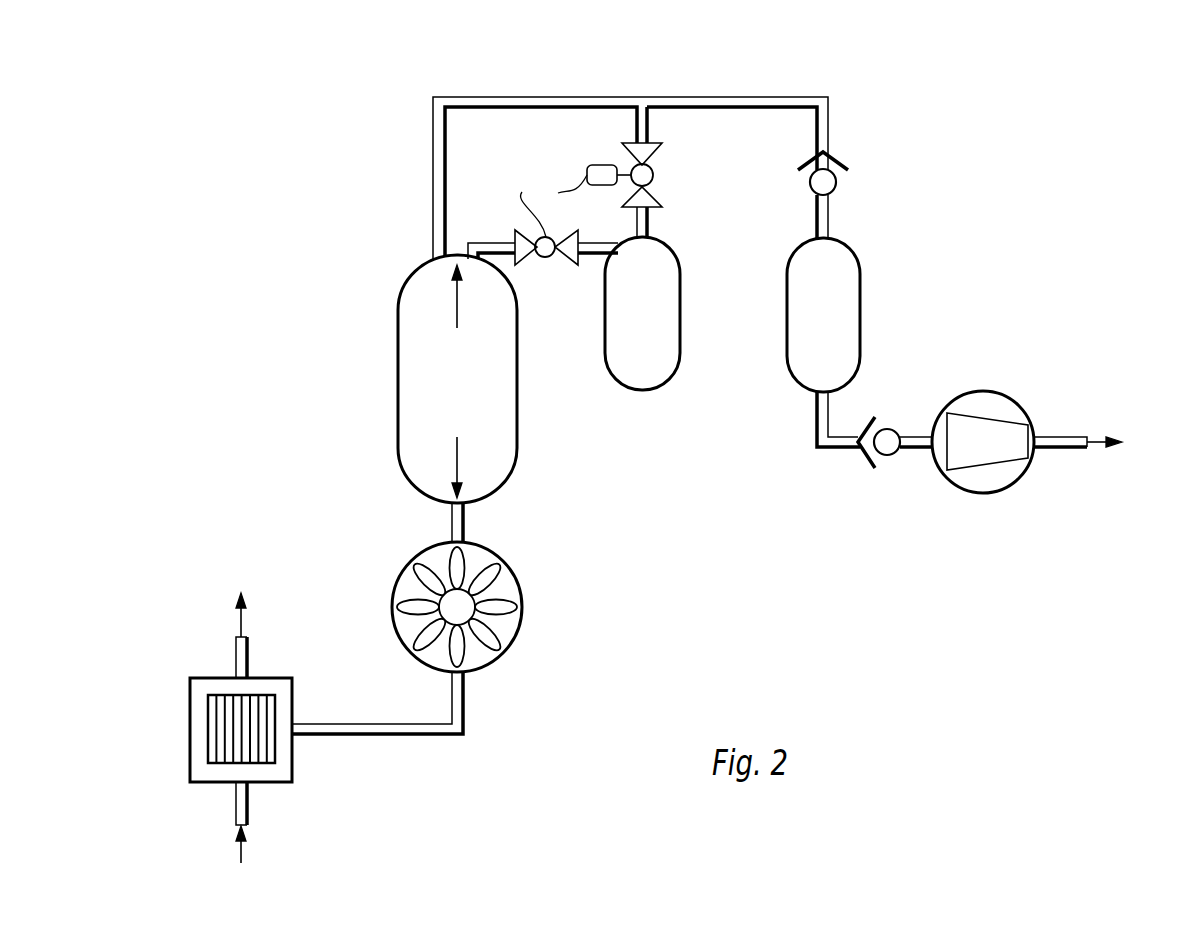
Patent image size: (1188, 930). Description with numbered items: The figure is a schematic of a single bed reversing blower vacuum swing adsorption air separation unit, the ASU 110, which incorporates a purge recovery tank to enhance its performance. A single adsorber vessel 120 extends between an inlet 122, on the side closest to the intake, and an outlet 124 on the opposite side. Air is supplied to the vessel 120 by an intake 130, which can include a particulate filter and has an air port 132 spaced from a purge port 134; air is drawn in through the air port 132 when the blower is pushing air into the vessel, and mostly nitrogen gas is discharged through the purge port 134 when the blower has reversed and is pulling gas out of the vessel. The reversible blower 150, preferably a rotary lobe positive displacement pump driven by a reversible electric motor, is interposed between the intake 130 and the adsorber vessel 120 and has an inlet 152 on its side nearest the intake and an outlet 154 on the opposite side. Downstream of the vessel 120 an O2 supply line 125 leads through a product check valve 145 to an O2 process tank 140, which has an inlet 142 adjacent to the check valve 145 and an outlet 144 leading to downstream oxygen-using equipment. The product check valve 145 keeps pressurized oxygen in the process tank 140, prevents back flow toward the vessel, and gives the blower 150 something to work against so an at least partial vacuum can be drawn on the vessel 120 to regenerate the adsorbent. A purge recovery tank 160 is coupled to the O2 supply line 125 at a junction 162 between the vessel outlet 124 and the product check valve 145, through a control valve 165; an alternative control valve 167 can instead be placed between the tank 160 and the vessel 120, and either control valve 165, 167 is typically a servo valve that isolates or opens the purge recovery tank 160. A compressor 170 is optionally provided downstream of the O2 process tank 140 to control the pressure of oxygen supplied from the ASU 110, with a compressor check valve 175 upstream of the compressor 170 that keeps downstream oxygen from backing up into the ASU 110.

The air separation unit (ASU) 110 is at (833, 637).
The single adsorber vessel 120 is at (398, 413).
The inlet 122 is at (465, 513).
The outlet 124 is at (440, 244).
The O2 supply line 125 is at (775, 96).
The intake 130 is at (292, 762).
The air port 132 is at (248, 802).
The purge port 134 is at (236, 657).
The O2 process tank 140 is at (860, 327).
The inlet 142 is at (830, 222).
The outlet 144 is at (818, 400).
The product check valve 145 is at (810, 187).
The reversible blower 150 is at (515, 638).
The inlet 152 is at (452, 680).
The outlet 154 is at (452, 530).
The purge recovery tank 160 is at (635, 391).
The junction 162 is at (643, 97).
The control valve 165 is at (660, 193).
The control valve 167 is at (565, 262).
The compressor 170 is at (985, 391).
The compressor check valve 175 is at (887, 455).